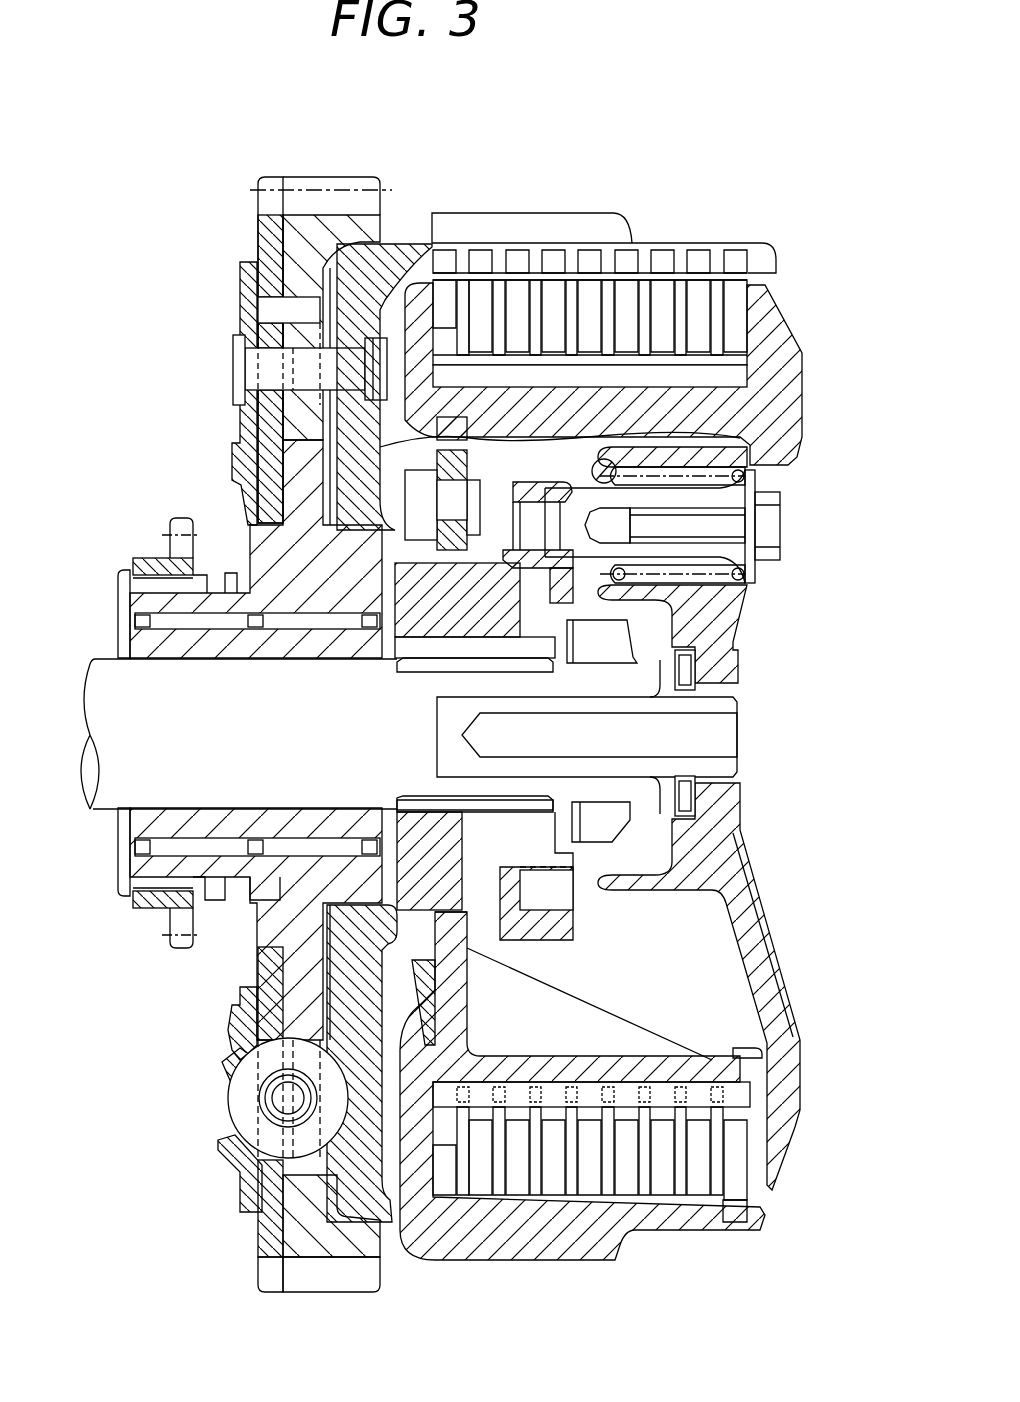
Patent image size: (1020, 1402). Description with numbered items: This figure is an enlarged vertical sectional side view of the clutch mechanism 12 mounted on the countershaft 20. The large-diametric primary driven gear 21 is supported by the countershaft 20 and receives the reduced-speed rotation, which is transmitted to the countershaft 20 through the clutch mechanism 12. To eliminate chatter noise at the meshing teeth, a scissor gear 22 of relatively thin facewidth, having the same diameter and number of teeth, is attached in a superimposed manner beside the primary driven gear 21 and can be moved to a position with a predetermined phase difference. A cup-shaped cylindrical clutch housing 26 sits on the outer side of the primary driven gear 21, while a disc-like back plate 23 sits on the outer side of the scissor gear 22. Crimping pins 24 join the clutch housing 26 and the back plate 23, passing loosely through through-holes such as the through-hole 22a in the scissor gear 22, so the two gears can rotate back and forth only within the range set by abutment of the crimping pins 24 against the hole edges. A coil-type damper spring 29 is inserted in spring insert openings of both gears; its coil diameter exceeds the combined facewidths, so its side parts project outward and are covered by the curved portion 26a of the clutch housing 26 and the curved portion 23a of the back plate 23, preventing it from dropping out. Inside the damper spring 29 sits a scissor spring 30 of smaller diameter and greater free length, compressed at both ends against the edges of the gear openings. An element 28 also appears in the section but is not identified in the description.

The clutch mechanism 12 is at (772, 246).
The countershaft 20 is at (96, 660).
The primary driven gear 21 is at (316, 222).
The scissor gear 22 is at (265, 226).
The through-hole 22a is at (270, 312).
The back plate 23 is at (240, 440).
The curved portion 23a is at (222, 1065).
The crimping pins 24 is at (347, 357).
The clutch housing 26 is at (800, 441).
The curved portion 26a is at (395, 1232).
The conical member 28 is at (623, 1065).
The damper spring 29 is at (238, 1120).
The scissor spring 30 is at (268, 1100).